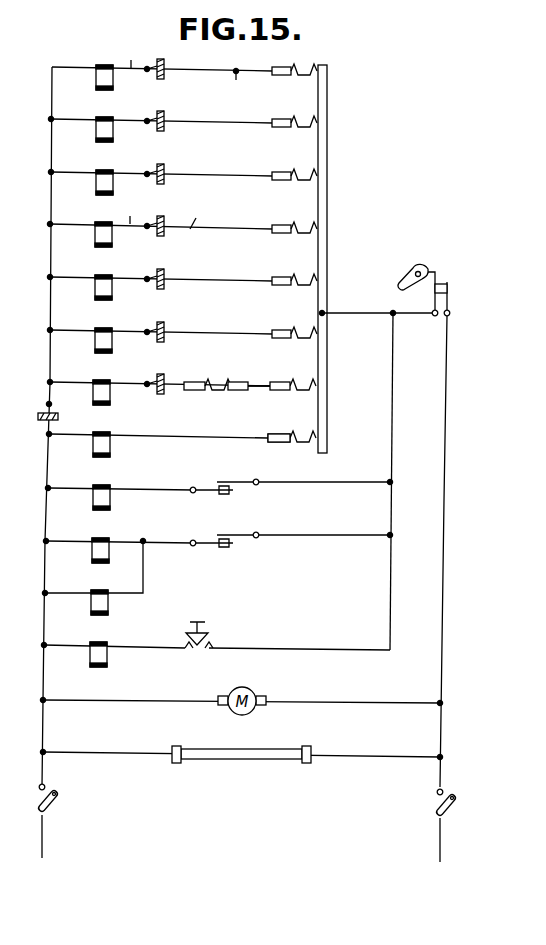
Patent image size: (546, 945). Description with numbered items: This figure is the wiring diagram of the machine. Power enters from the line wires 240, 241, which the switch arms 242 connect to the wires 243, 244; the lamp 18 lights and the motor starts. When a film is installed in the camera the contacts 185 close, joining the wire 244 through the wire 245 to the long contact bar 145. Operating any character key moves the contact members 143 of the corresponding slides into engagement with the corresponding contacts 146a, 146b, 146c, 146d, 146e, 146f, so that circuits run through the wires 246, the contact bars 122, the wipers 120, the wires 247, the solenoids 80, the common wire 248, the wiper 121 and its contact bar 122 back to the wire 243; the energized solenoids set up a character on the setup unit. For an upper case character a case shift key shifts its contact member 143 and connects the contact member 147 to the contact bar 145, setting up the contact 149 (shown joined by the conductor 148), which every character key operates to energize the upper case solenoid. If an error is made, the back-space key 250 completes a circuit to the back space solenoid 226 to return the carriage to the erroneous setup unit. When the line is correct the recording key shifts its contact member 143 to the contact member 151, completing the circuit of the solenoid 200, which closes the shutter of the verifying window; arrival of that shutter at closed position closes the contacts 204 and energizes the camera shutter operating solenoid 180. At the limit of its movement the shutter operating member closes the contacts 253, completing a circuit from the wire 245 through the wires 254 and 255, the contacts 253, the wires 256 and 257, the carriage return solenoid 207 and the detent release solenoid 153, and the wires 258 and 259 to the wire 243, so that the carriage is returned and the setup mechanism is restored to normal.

The lamp 18 is at (241, 775).
The solenoid 80 is at (92, 224).
The wiper 120 is at (137, 211).
The wiper 121 is at (26, 398).
The contact bar 122 is at (103, 241).
The contact member 143 is at (244, 364).
The contact bar 145 is at (345, 259).
The contact 146a is at (279, 88).
The contact 146b is at (271, 131).
The contact 146c is at (272, 184).
The contact 146d is at (264, 237).
The contact 146e is at (264, 290).
The contact 146f is at (264, 326).
The contact member 147 is at (285, 370).
The conductor 148 is at (263, 403).
The contact 149 is at (247, 369).
The contact member 151 is at (258, 448).
The detent release solenoid 153 is at (121, 615).
The camera shutter operating solenoid 180 is at (121, 500).
The contacts 185 is at (426, 279).
The solenoid 200 is at (121, 447).
The contacts 204 is at (291, 493).
The carriage return solenoid 207 is at (82, 562).
The back space solenoid 226 is at (123, 664).
The line wire 240 is at (63, 849).
The line wire 241 is at (406, 853).
The switch arm 242 is at (246, 823).
The wire 243 is at (23, 737).
The wire 244 is at (458, 551).
The wire 245 is at (375, 300).
The wire 246 is at (214, 148).
The wire 247 is at (129, 130).
The wire 248 is at (29, 427).
The back-space key 250 is at (220, 633).
The contacts 253 is at (230, 550).
The wire 254 is at (409, 480).
The wire 255 is at (326, 550).
The wire 256 is at (166, 528).
The wire 257 is at (150, 566).
The wire 258 is at (70, 527).
The wire 259 is at (64, 616).